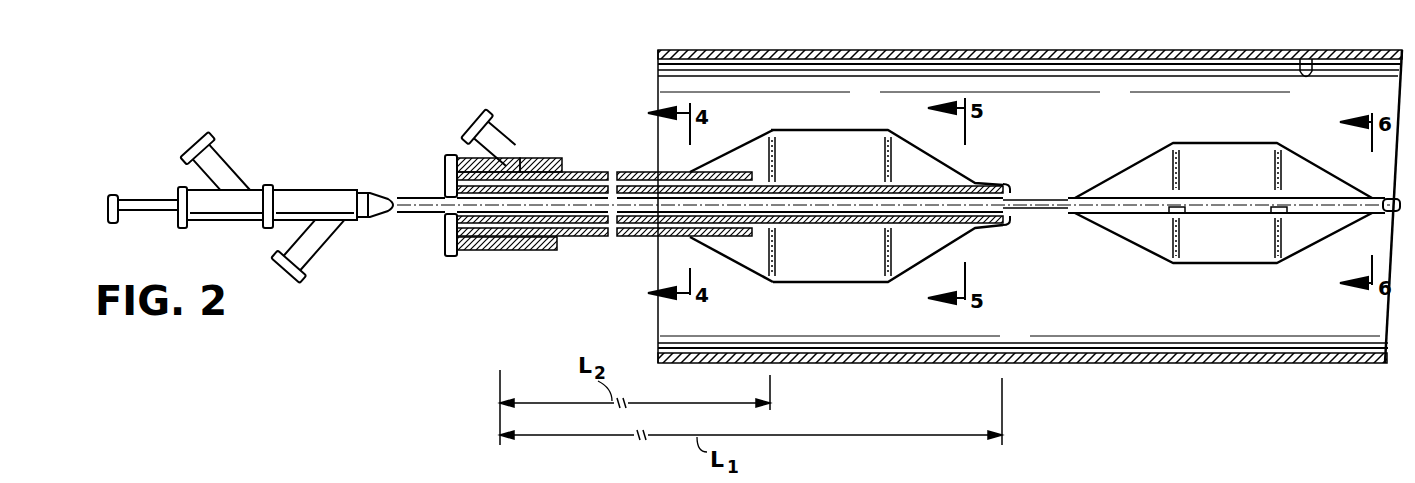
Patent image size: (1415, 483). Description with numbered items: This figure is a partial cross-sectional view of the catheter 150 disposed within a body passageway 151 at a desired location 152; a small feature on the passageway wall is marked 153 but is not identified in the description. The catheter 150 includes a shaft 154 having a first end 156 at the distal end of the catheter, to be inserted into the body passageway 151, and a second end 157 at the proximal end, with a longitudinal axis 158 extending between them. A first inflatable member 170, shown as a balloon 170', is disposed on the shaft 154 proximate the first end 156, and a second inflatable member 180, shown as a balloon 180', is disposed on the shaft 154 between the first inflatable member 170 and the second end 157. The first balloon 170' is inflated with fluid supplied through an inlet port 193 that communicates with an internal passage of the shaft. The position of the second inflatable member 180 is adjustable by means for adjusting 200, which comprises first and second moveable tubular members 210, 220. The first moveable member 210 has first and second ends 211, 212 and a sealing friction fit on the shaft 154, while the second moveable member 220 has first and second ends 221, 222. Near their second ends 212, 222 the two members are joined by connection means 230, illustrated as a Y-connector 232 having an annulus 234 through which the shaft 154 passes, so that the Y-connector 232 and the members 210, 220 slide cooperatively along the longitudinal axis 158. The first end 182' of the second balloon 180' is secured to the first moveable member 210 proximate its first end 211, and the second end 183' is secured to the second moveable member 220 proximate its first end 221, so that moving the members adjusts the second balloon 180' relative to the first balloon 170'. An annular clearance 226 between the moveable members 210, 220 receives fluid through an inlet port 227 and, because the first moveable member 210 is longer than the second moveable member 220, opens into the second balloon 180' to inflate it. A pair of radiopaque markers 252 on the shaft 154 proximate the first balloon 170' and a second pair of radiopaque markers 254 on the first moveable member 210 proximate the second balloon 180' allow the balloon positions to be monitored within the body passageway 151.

The catheter 150 is at (298, 162).
The inlet port 193 is at (290, 268).
The annulus 234 is at (445, 196).
The connection means 230 is at (444, 230).
The second end of shaft 157 is at (446, 258).
The second end of second moveable member 222 is at (446, 152).
The Y-connector 232 is at (551, 158).
The inlet port 227 is at (474, 118).
The second end of first moveable member 212 is at (475, 256).
The means for adjusting 200 is at (573, 170).
The annular clearance 226 is at (597, 238).
The second moveable tubular member 220 is at (640, 170).
The first end of first moveable member 211 is at (893, 224).
The first end of second balloon 182' is at (983, 296).
The first moveable tubular member 210 is at (832, 226).
The longitudinal axis 158 is at (1045, 200).
The shaft 154 is at (1010, 216).
The first end of second moveable member 221 is at (745, 158).
The second inflatable member 180 is at (887, 95).
The second balloon 180' is at (888, 144).
The second end of second balloon 183' is at (719, 318).
The second pair of radiopaque markers 254 is at (773, 272).
The first inflatable member 170 is at (1226, 109).
The first balloon 170' is at (1223, 134).
The radiopaque markers 252 is at (1176, 214).
The first end of shaft 156 is at (1380, 218).
The desired location 152 is at (1076, 50).
The vessel lesion 153 is at (1311, 74).
The body passageway 151 is at (1148, 366).